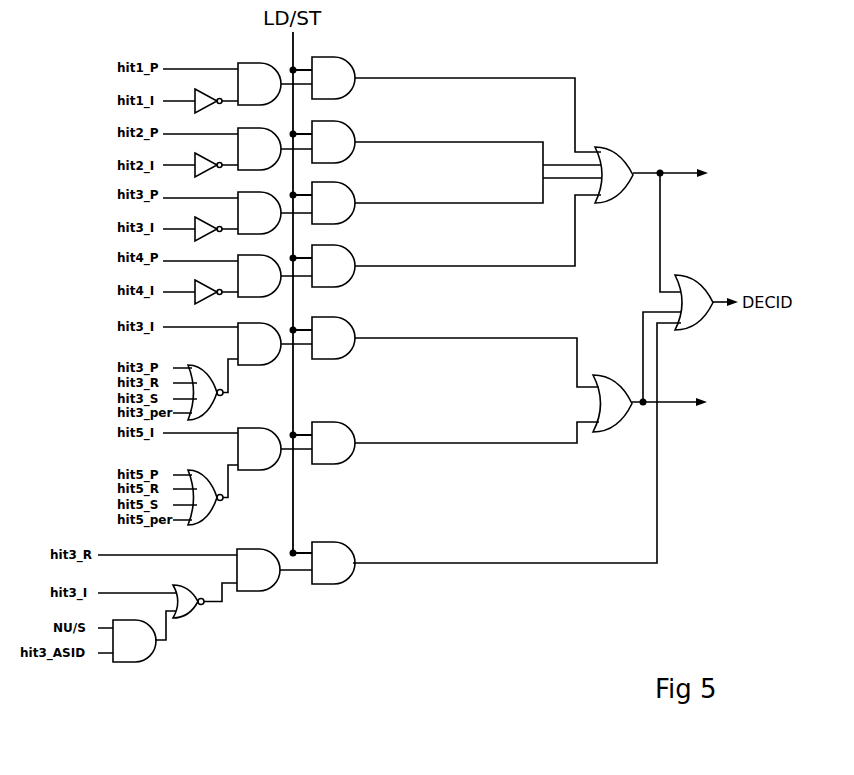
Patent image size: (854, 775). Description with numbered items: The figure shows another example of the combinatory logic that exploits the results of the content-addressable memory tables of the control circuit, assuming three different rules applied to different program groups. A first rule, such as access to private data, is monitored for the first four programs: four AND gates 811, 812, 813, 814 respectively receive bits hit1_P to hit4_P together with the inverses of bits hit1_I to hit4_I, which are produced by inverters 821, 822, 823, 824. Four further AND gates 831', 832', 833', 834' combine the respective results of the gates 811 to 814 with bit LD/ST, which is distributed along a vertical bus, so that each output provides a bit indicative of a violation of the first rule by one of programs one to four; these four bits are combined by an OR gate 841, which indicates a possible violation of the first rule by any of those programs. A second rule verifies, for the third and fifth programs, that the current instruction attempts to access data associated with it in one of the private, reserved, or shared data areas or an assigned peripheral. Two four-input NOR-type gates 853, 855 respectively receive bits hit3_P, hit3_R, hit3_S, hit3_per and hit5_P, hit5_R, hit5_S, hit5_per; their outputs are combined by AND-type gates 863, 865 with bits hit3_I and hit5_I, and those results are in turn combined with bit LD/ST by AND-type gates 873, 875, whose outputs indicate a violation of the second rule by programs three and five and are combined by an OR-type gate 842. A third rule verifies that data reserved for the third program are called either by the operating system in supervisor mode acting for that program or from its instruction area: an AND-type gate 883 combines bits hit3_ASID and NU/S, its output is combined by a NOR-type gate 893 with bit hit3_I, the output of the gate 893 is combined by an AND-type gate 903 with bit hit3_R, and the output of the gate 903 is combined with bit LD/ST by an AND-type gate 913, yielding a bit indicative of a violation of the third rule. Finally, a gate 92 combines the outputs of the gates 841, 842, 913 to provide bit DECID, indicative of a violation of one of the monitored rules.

The AND gate 811 is at (253, 63).
The AND gate 812 is at (252, 137).
The AND gate 813 is at (252, 201).
The AND gate 814 is at (252, 264).
The inverter 821 is at (197, 95).
The inverter 822 is at (197, 159).
The inverter 823 is at (197, 223).
The inverter 824 is at (197, 286).
The AND gate 831' is at (363, 60).
The AND gate 832' is at (363, 123).
The AND gate 833' is at (363, 185).
The AND gate 834' is at (363, 246).
The OR gate 841 is at (622, 147).
The OR-type gate 842 is at (607, 375).
The XOR-type gate 92 is at (703, 277).
The four-input NOR-type gate 853 is at (200, 368).
The four-input NOR-type gate 855 is at (200, 473).
The AND-type gate 863 is at (251, 333).
The AND-type gate 865 is at (253, 431).
The AND-type gate 873 is at (337, 317).
The AND-type gate 875 is at (337, 422).
The AND-type gate 883 is at (127, 662).
The NOR-type gate 893 is at (195, 615).
The AND-type gate 903 is at (250, 591).
The AND-type gate 913 is at (335, 584).